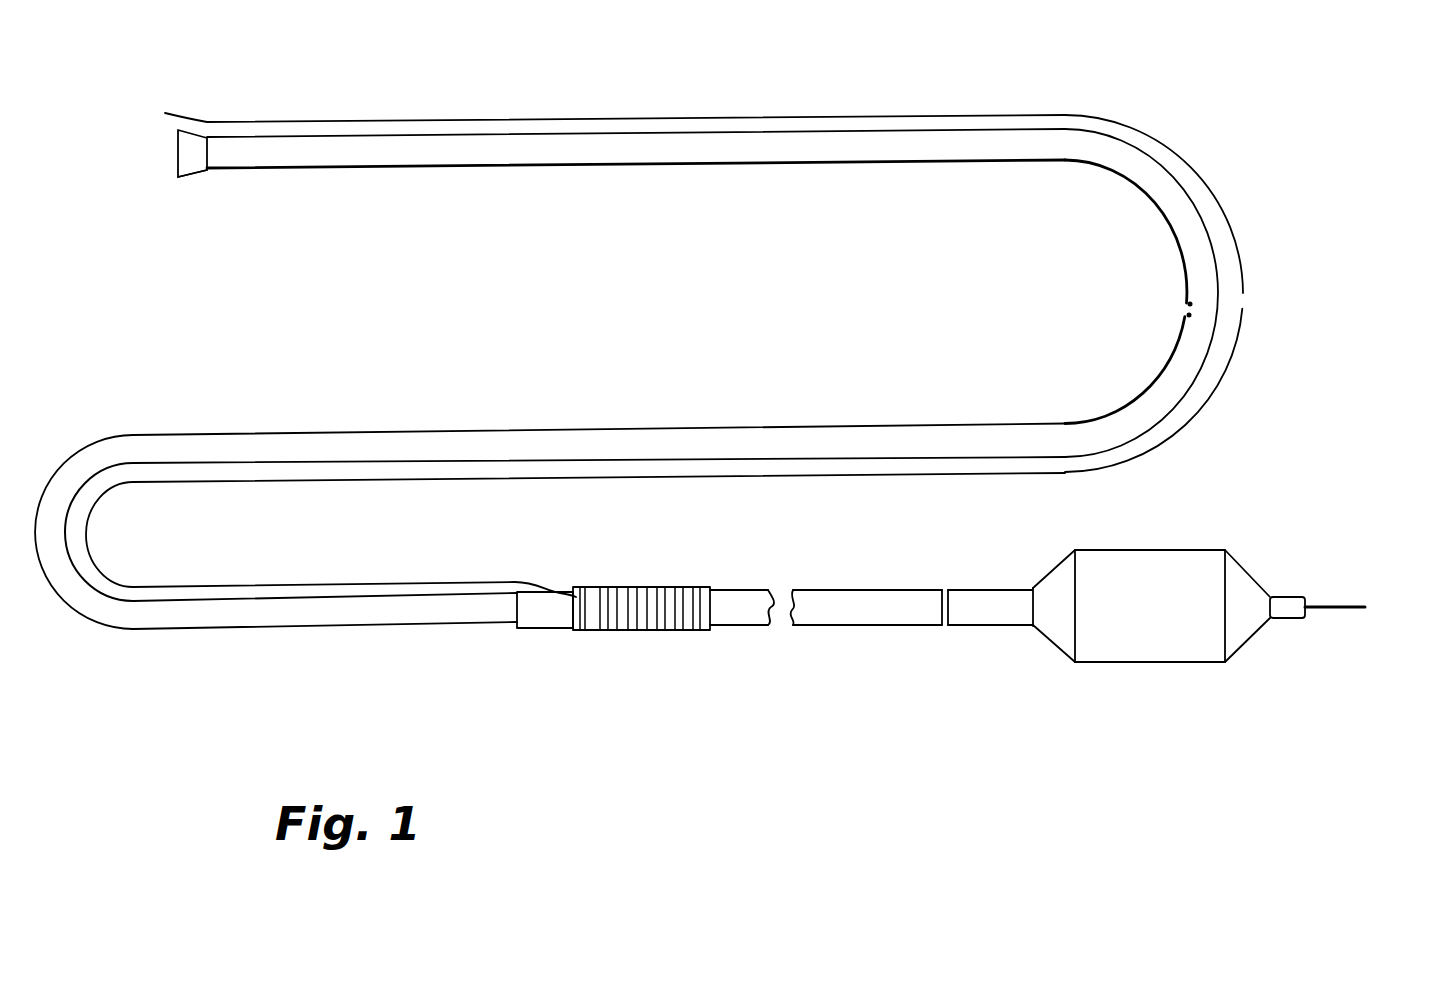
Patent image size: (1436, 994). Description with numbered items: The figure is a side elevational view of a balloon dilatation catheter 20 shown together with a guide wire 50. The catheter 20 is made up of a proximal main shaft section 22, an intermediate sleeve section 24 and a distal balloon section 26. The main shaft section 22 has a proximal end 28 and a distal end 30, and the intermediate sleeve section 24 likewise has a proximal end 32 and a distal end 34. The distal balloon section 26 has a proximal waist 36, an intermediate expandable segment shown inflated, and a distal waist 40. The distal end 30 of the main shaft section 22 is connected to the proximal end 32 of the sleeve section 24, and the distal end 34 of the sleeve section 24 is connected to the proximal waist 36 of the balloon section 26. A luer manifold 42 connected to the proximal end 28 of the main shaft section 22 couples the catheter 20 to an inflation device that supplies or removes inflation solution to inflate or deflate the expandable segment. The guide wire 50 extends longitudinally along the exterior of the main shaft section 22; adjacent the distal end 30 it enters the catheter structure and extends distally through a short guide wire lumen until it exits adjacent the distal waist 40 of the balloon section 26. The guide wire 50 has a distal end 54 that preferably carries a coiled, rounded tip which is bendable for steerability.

The balloon dilatation catheter 20 is at (1265, 329).
The proximal main shaft section 22 is at (900, 166).
The intermediate sleeve section 24 is at (727, 606).
The distal balloon section 26 is at (1138, 552).
The proximal end 28 is at (177, 160).
The distal end 30 is at (557, 630).
The proximal end 32 is at (590, 633).
The distal end 34 is at (897, 626).
The proximal waist 36 is at (975, 616).
The distal waist 40 is at (1283, 618).
The luer manifold 42 is at (183, 177).
The guide wire 50 is at (288, 121).
The distal end 54 is at (1352, 603).